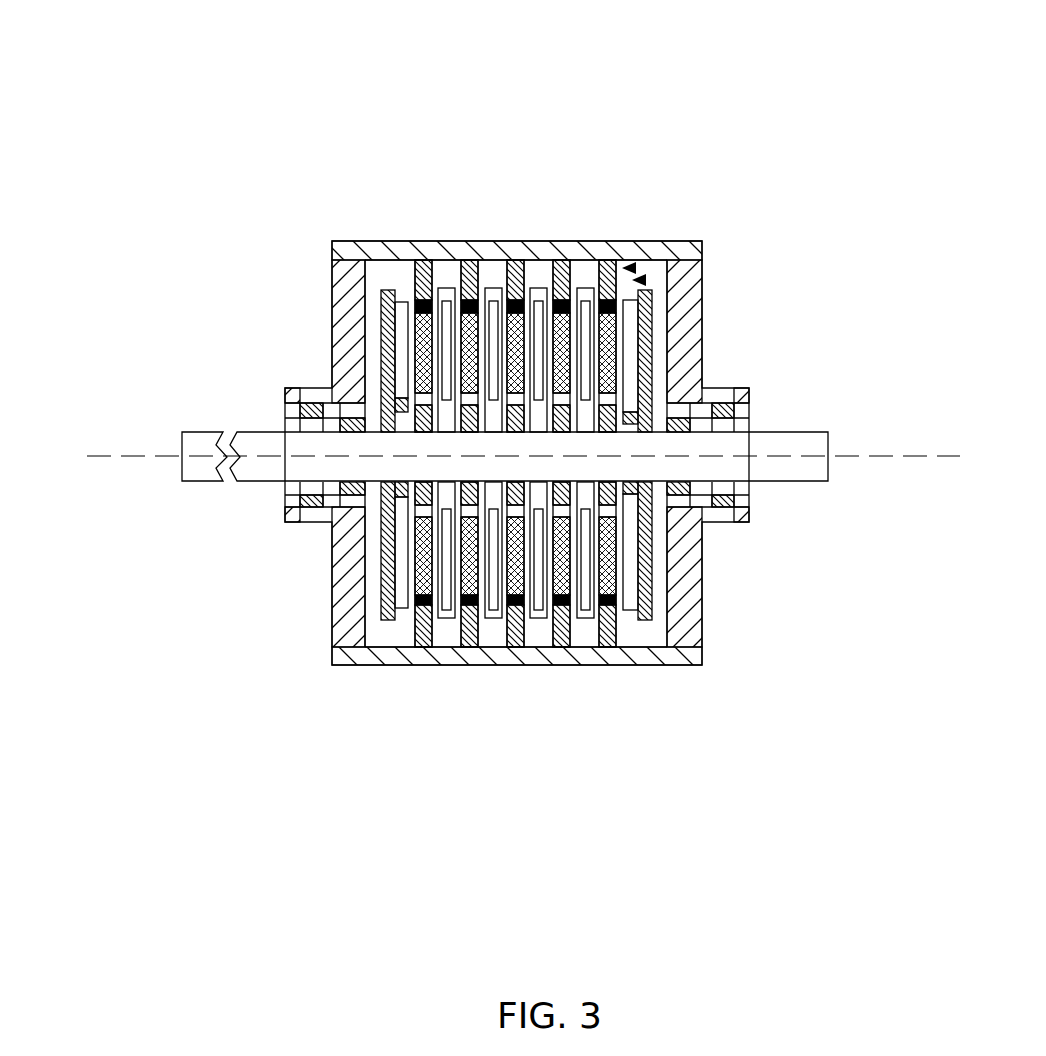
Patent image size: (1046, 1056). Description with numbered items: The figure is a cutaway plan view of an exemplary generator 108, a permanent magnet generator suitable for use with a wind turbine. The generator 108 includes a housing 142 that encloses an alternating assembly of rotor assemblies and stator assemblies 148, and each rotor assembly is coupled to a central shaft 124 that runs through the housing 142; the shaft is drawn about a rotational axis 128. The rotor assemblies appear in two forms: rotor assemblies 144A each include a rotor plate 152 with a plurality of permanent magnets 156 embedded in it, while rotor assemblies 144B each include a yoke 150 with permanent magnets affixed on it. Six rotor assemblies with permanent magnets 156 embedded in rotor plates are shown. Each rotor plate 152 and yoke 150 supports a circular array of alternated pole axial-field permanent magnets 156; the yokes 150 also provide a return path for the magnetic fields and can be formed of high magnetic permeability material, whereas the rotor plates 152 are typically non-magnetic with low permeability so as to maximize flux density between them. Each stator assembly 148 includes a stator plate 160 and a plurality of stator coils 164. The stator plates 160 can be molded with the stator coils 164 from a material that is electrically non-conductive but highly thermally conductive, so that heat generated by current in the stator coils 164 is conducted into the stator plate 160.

The generator 108 is at (606, 140).
The shaft 124 is at (828, 458).
The rotational axis 128 is at (108, 455).
The housing 142 is at (334, 243).
The rotor assemblies 144A is at (438, 262).
The rotor assemblies 144B is at (362, 386).
The stator assemblies 148 is at (640, 268).
The yoke 150 is at (365, 300).
The rotor plate 152 is at (490, 260).
The permanent magnets 156 is at (350, 272).
The stator plate 160 is at (660, 262).
The stator coils 164 is at (652, 340).